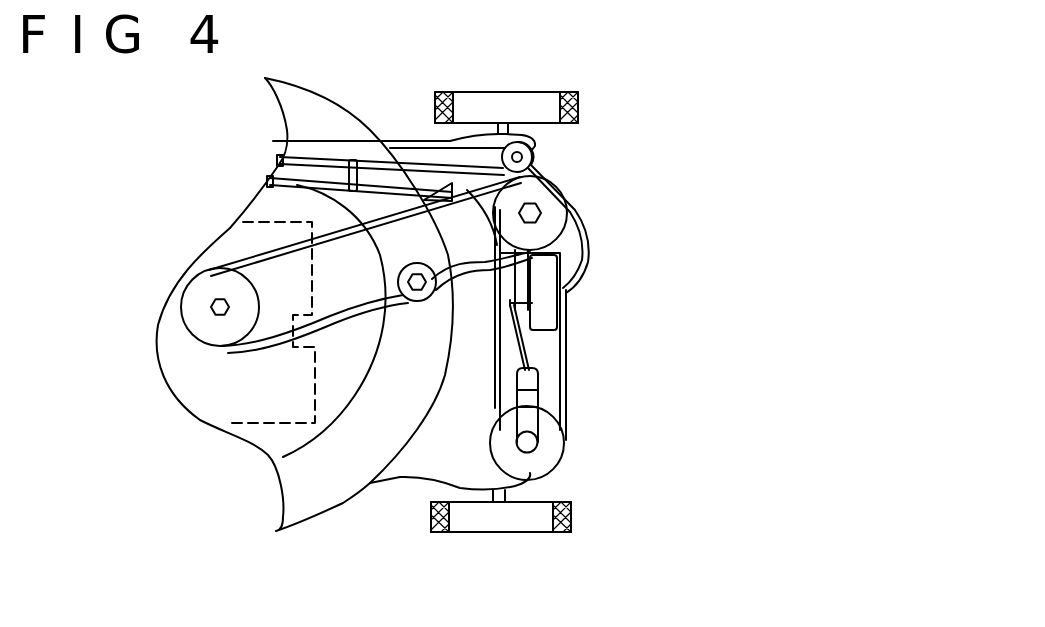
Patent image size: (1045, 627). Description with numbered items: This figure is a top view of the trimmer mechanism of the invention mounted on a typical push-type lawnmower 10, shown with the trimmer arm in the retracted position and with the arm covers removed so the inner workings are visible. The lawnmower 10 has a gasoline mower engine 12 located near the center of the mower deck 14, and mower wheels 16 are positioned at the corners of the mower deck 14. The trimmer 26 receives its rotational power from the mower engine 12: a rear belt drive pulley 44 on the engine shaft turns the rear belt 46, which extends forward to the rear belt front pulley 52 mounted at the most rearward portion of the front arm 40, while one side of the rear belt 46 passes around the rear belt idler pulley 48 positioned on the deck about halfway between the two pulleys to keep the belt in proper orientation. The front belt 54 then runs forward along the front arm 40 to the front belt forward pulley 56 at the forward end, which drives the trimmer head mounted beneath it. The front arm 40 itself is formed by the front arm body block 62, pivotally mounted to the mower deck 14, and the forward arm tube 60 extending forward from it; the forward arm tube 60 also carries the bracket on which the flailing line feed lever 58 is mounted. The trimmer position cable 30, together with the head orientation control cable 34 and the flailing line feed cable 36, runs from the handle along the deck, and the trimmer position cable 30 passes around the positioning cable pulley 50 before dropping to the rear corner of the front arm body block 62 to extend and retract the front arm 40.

The lawnmower 10 is at (334, 304).
The mower engine 12 is at (245, 241).
The mower deck 14 is at (297, 457).
The mower wheels 16 is at (510, 93).
The trimmer 26 is at (611, 174).
The trimmer position cable 30 is at (400, 137).
The head orientation control cable 34 is at (590, 243).
The flailing line feed cable 36 is at (323, 160).
The front arm 40 is at (609, 365).
The rear belt drive pulley 44 is at (190, 288).
The rear belt 46 is at (300, 240).
The rear belt idler pulley 48 is at (412, 296).
The positioning cable pulley 50 is at (533, 152).
The rear belt front pulley 52 is at (565, 192).
The front belt 54 is at (567, 397).
The front belt forward pulley 56 is at (553, 460).
The flailing line feed lever 58 is at (533, 423).
The forward arm tube 60 is at (533, 352).
The front arm body block 62 is at (523, 278).